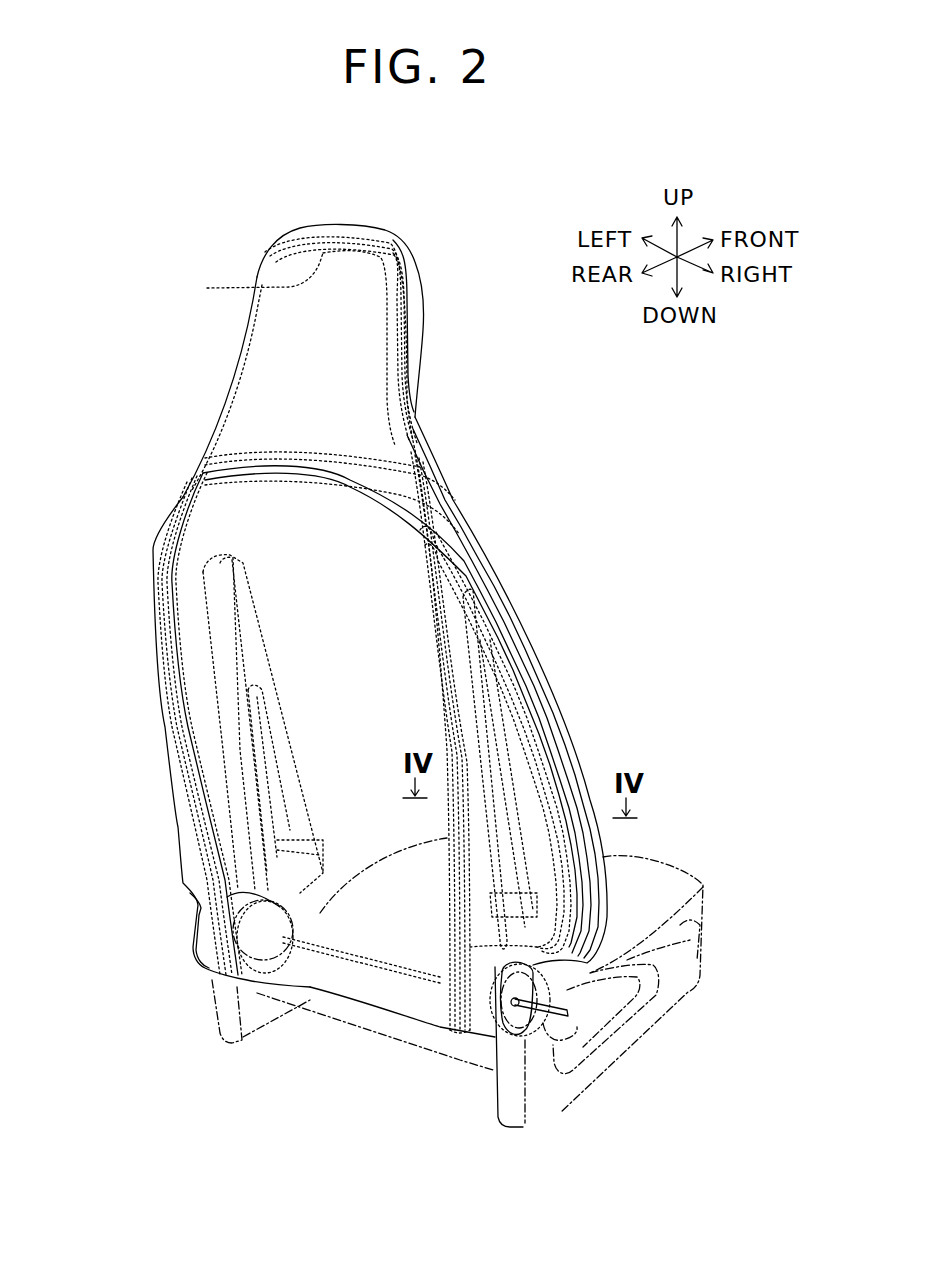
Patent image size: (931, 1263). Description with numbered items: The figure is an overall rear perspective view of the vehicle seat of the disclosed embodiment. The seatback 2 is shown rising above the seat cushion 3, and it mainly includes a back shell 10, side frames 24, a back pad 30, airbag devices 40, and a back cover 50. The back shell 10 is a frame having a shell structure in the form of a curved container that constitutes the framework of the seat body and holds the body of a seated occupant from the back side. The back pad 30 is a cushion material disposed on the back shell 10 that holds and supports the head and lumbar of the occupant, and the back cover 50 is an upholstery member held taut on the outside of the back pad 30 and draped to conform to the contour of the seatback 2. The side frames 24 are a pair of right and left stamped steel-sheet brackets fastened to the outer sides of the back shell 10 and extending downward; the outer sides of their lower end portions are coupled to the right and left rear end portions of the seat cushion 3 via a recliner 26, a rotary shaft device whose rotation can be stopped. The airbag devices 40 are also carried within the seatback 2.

The seatback 2 is at (384, 699).
The seat cushion 3 is at (660, 887).
The back shell 10 is at (281, 360).
The back pad 30 is at (380, 645).
The back cover 50 is at (423, 322).
The airbag device 40 is at (243, 625).
The side frame 24 is at (225, 1015).
The recliner 26 is at (535, 1033).